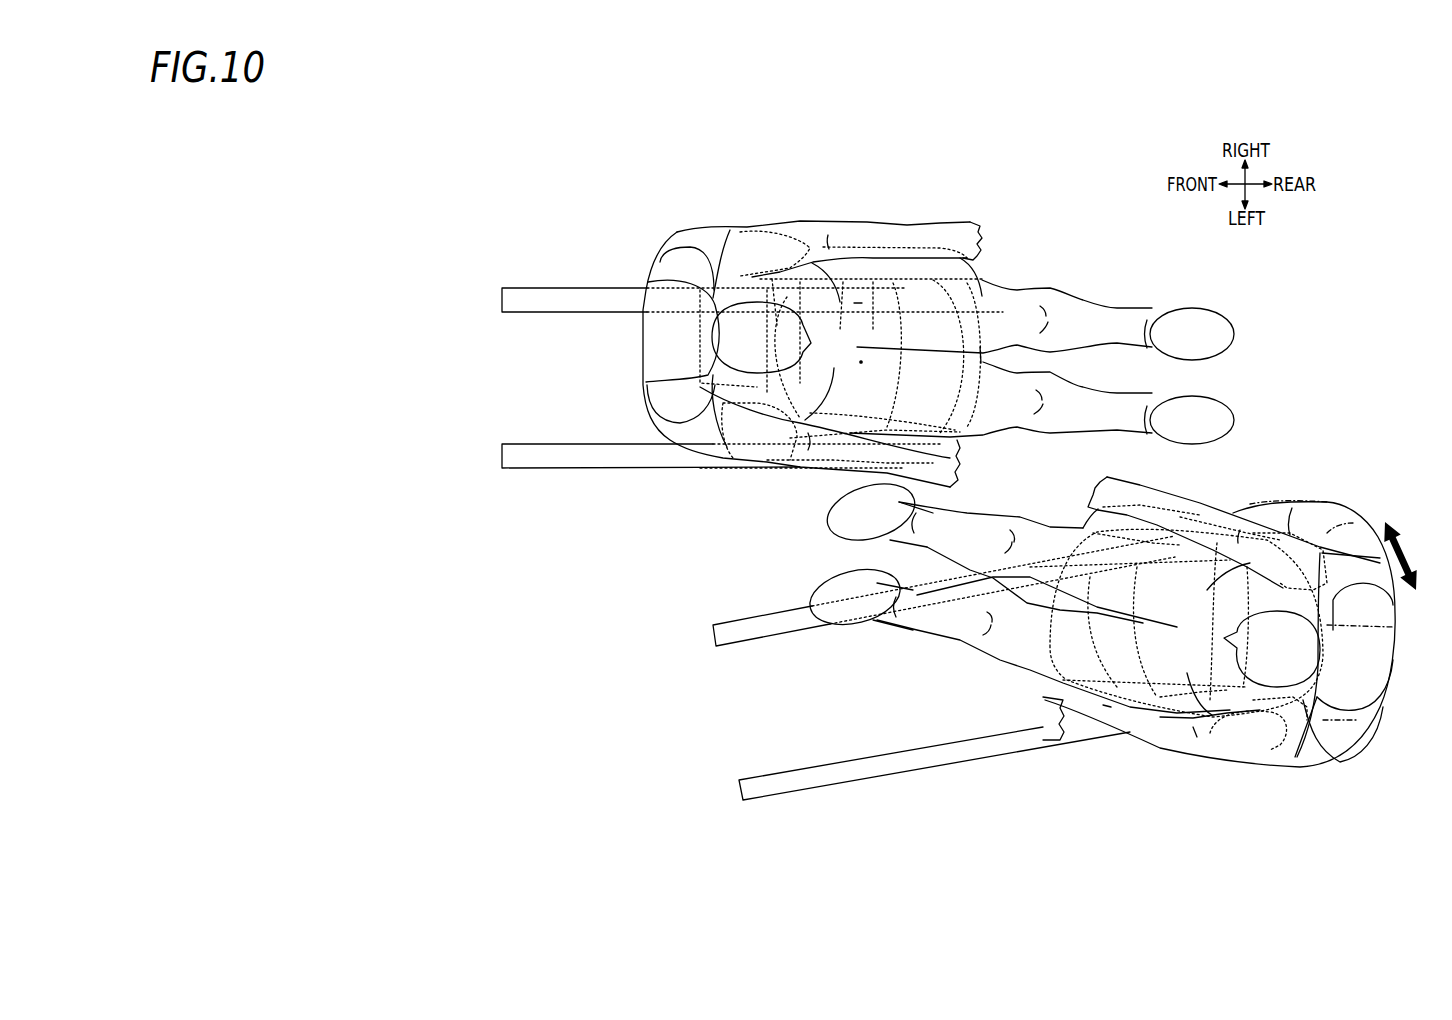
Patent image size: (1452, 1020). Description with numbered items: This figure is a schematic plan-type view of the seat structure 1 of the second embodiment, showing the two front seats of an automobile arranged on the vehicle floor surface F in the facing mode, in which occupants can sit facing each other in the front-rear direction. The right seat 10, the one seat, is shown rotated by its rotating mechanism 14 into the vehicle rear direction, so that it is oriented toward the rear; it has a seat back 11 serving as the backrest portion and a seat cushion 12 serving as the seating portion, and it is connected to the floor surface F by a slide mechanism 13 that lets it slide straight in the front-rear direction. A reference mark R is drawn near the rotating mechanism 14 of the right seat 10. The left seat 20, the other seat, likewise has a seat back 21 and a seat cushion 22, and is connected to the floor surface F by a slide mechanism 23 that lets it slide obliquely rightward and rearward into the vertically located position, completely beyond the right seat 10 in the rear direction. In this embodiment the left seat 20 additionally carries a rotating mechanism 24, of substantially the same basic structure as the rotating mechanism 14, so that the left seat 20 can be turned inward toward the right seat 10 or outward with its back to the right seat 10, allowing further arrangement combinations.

The seat structure 1 is at (513, 251).
The right seat 10 is at (678, 233).
The seat back 11 is at (700, 432).
The seat cushion 12 is at (960, 446).
The slide mechanism 13 is at (565, 298).
The rotating mechanism 14 is at (858, 310).
The left seat 20 is at (1323, 502).
The seat back 21 is at (1312, 760).
The seat cushion 22 is at (1083, 697).
The slide mechanism 23 is at (743, 627).
The rotating mechanism 24 is at (1107, 710).
The rotation center R is at (862, 360).
The vehicle floor surface F is at (483, 585).